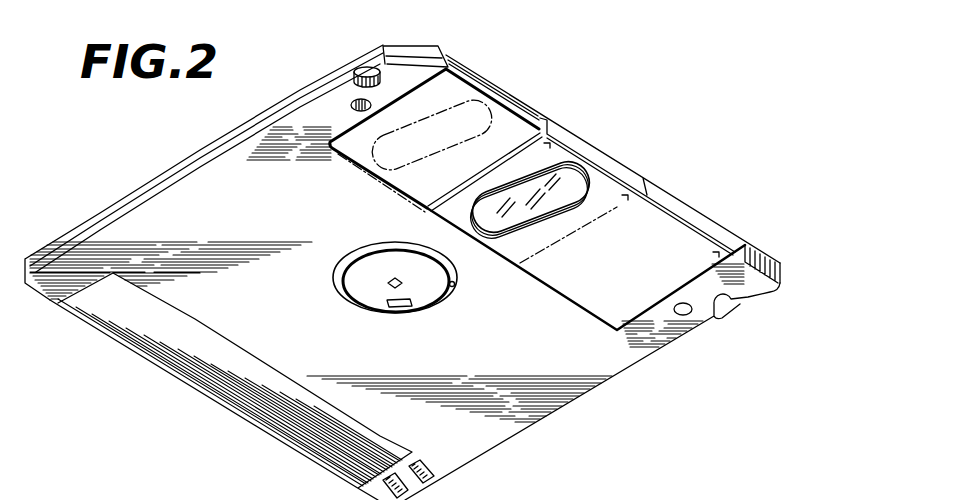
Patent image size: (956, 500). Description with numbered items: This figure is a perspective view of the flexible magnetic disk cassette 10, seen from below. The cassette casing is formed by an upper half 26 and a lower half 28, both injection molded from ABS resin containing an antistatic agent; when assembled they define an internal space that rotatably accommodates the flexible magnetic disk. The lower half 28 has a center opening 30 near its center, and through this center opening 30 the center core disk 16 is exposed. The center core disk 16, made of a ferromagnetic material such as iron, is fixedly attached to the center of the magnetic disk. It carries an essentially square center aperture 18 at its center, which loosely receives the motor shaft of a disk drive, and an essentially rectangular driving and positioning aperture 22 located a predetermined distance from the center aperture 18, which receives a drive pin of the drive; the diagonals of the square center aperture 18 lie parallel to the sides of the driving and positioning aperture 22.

The flexible magnetic disk cassette 10 is at (762, 240).
The center core disk 16 is at (423, 293).
The center aperture 18 is at (388, 284).
The driving and positioning aperture 22 is at (397, 308).
The upper half 26 is at (441, 54).
The lower half 28 is at (413, 48).
The center opening 30 is at (455, 287).